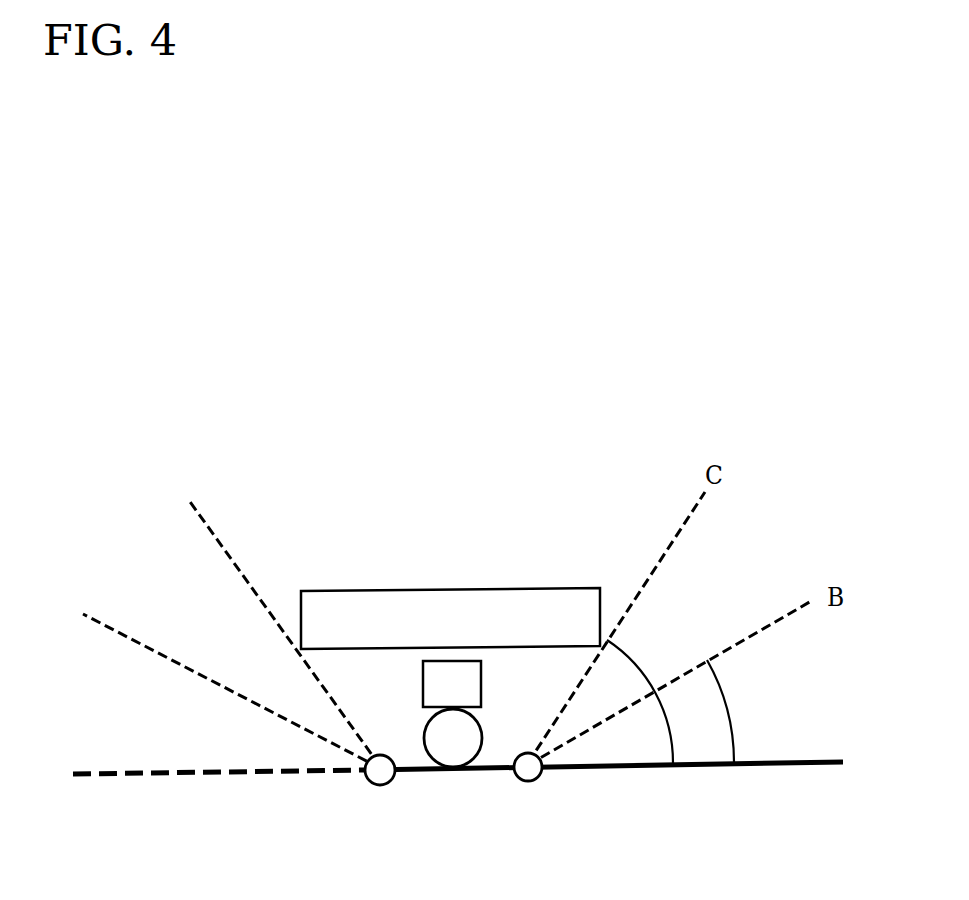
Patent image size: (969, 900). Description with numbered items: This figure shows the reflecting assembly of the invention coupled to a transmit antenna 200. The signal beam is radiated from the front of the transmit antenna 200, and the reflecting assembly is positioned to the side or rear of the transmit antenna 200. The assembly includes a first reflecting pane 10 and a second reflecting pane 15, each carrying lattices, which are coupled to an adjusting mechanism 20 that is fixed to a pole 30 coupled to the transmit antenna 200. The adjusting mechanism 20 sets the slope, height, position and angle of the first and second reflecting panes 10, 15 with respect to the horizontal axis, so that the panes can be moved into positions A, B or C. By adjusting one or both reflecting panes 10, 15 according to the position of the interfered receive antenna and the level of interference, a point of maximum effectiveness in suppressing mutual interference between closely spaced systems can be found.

The transmit antenna 200 is at (523, 589).
The first reflecting pane 10 is at (193, 773).
The second reflecting pane 15 is at (747, 765).
The adjusting mechanism 20 is at (472, 768).
The pole 30 is at (453, 742).